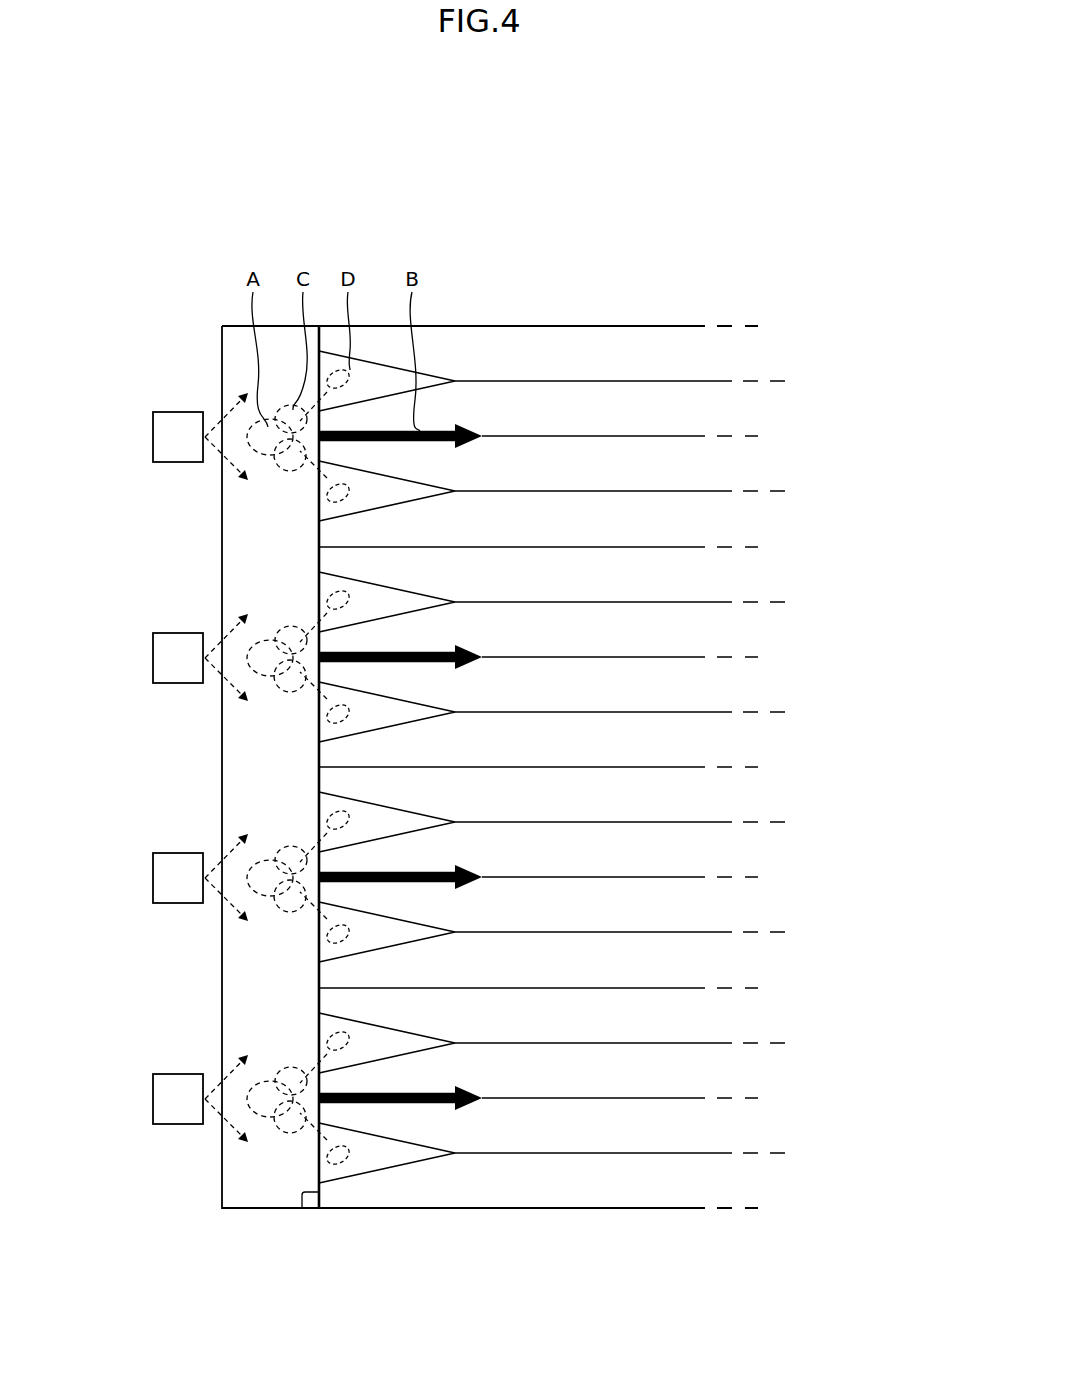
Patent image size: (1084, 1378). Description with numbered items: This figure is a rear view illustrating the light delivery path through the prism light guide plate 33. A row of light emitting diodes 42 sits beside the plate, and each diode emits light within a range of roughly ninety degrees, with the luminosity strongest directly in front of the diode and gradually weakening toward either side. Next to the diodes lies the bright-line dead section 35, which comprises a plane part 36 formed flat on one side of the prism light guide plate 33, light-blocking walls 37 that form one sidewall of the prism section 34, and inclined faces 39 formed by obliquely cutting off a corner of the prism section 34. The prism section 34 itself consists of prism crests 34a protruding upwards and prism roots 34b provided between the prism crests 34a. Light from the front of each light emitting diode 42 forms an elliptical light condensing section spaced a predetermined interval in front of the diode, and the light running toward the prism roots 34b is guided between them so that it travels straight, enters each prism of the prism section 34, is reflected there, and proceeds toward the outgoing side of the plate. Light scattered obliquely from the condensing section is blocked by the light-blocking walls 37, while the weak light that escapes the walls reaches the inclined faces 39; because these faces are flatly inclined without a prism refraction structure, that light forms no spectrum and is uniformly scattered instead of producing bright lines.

The prism light guide plate 33 is at (713, 262).
The prism section 34 is at (619, 767).
The prism crests 34a is at (683, 382).
The prism roots 34b is at (677, 437).
The bright-line dead section 35 is at (330, 838).
The plane part 36 is at (268, 1190).
The light-blocking walls 37 is at (305, 1207).
The inclined faces 39 is at (372, 1153).
The light emitting diodes 42 is at (163, 438).